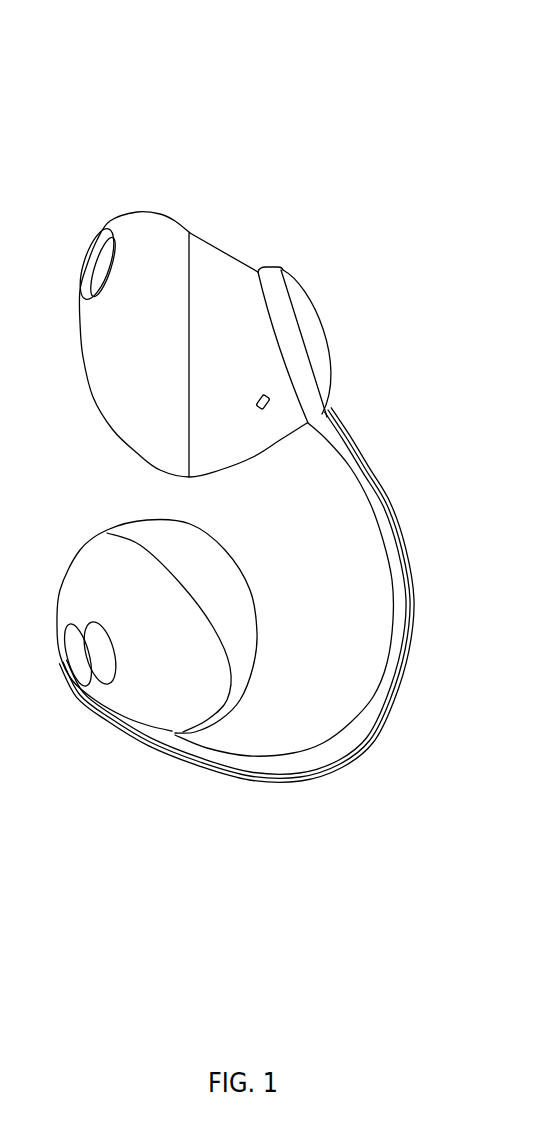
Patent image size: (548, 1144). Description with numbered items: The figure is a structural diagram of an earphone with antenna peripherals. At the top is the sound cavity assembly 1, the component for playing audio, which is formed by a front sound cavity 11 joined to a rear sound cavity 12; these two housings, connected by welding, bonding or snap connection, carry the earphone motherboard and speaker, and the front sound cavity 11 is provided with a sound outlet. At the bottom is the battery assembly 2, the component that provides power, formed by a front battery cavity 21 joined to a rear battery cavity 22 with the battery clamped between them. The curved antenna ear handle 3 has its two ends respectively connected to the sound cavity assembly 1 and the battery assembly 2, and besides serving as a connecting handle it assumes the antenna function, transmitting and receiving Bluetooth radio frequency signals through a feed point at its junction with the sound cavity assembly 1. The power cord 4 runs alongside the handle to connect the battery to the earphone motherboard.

The sound cavity assembly 1 is at (128, 248).
The front sound cavity 11 is at (168, 327).
The rear sound cavity 12 is at (237, 327).
The battery assembly 2 is at (153, 593).
The front battery cavity 21 is at (237, 598).
The rear battery cavity 22 is at (183, 623).
The antenna ear handle 3 is at (403, 680).
The power cord 4 is at (368, 717).